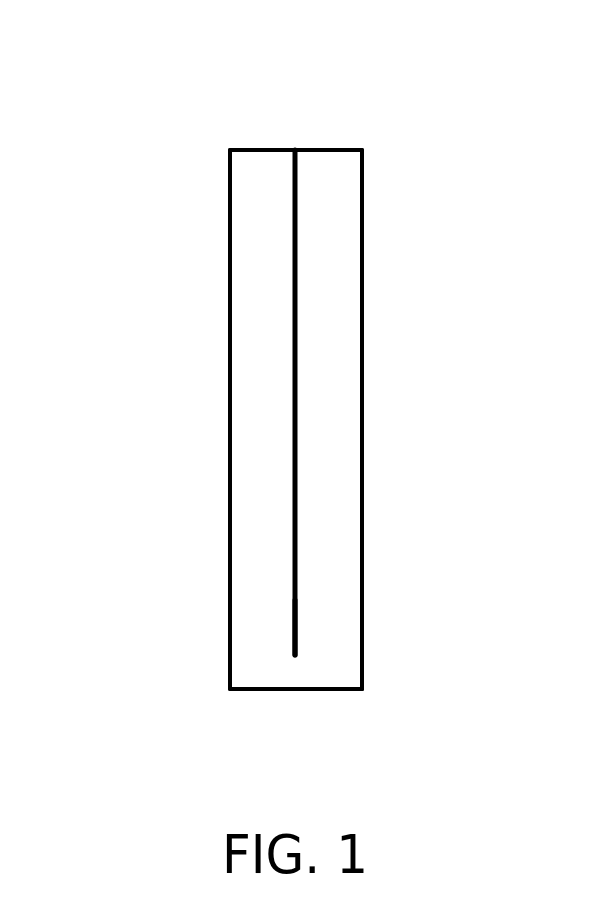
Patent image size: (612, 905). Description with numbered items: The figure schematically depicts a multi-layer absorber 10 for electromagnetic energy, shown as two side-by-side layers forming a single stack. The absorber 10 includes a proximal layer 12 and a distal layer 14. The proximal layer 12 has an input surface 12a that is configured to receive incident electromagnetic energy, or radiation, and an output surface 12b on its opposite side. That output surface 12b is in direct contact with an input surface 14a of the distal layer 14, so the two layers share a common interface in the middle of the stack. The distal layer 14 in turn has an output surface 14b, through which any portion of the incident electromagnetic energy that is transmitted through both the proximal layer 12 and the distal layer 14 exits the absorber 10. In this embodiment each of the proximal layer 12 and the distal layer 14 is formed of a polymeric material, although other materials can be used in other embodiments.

The multi-layer absorber 10 is at (328, 97).
The proximal layer 12 is at (230, 172).
The input surface 12a is at (230, 265).
The output surface 12b is at (295, 668).
The distal layer 14 is at (362, 265).
The input surface 14a is at (295, 668).
The output surface 14b is at (362, 650).